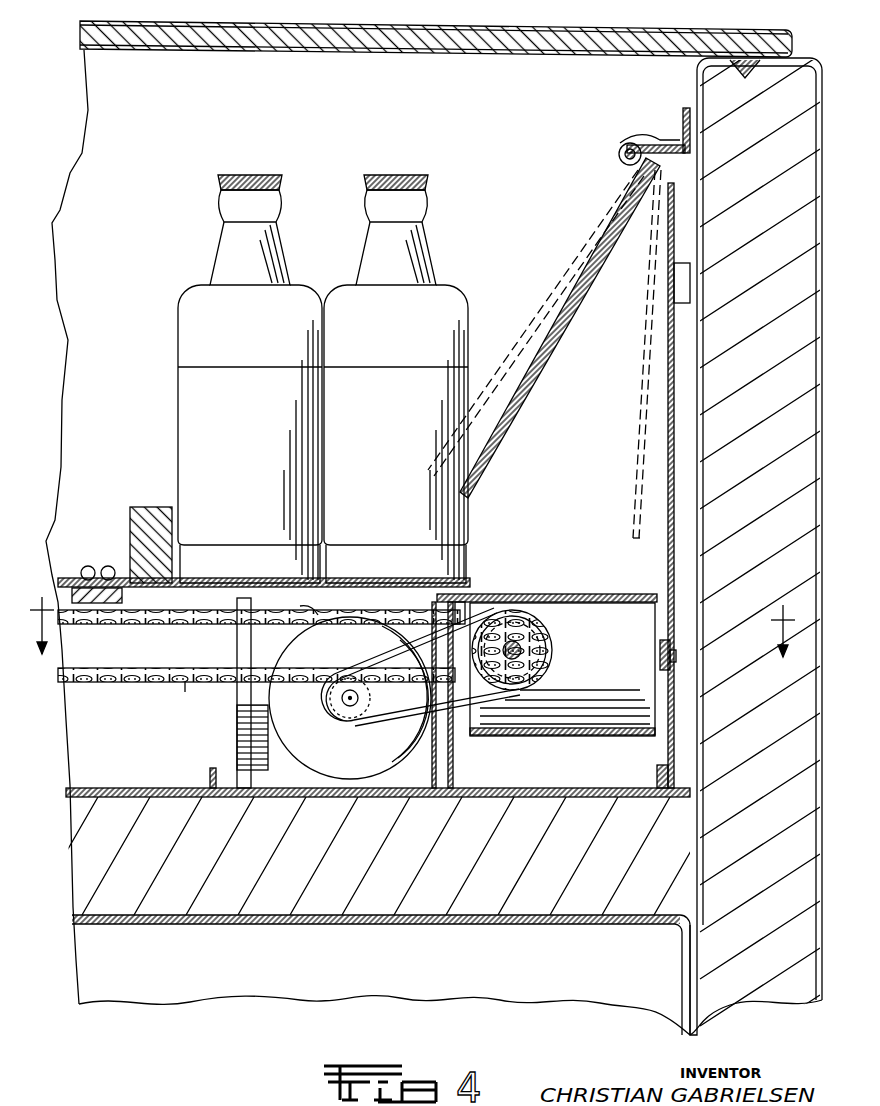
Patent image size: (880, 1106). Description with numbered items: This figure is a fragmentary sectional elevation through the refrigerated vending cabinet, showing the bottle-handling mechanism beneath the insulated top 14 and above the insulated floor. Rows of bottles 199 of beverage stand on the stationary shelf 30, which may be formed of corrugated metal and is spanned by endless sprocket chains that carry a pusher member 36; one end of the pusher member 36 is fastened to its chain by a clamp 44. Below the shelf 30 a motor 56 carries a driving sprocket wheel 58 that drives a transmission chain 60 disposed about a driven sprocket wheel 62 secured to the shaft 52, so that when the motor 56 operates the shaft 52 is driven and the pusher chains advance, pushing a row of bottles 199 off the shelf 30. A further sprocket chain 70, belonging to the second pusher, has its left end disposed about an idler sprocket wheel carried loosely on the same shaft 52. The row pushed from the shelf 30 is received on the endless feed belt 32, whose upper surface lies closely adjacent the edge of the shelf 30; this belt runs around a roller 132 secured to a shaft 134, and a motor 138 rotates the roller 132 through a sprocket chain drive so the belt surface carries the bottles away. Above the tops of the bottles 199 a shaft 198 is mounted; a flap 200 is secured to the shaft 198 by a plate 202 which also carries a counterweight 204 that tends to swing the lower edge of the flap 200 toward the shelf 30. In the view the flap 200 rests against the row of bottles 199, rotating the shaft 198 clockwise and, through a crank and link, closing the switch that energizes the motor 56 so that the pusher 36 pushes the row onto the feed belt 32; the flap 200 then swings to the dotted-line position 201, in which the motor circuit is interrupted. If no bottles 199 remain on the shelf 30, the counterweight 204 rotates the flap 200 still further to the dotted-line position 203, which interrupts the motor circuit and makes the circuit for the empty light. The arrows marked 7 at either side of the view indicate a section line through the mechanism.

The insulated top 14 is at (528, 54).
The stationary shelf 30 is at (468, 580).
The feed belt 32 is at (547, 594).
The pusher member 36 is at (148, 505).
The clamp 44 is at (90, 566).
The shaft 52 is at (545, 648).
The motor 56 is at (268, 660).
The driving sprocket wheel 58 is at (350, 708).
The transmission chain 60 is at (386, 662).
The driven sprocket wheel 62 is at (548, 630).
The sprocket chain 70 is at (158, 614).
The section line 7- 7 is at (412, 640).
The roller 132 is at (608, 740).
The shaft 134 is at (440, 632).
The motor 138 is at (312, 607).
The shaft 198 is at (623, 165).
The bottles 199 is at (288, 246).
The flap 200 is at (530, 400).
The dotted line position of flap 201 is at (628, 478).
The plate 202 is at (640, 148).
The dotted line position of flap 203 is at (535, 322).
The counterweight 204 is at (686, 110).